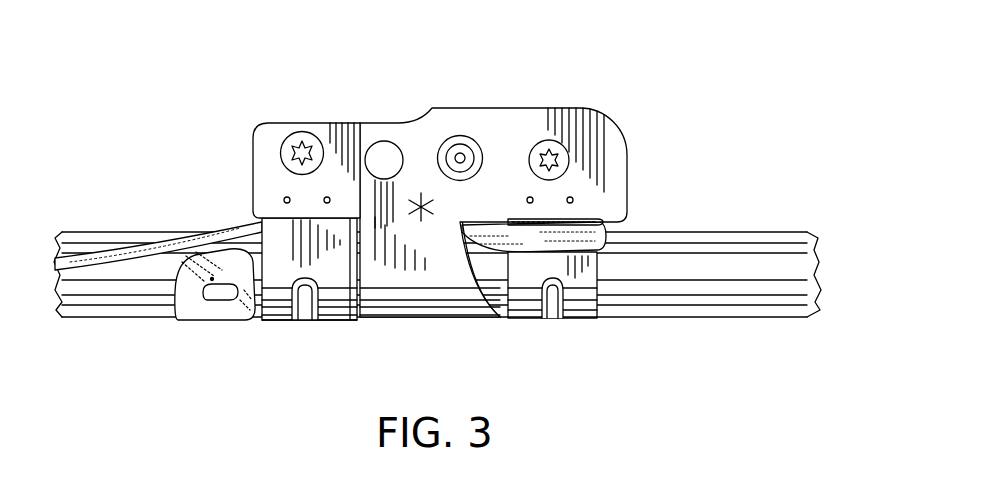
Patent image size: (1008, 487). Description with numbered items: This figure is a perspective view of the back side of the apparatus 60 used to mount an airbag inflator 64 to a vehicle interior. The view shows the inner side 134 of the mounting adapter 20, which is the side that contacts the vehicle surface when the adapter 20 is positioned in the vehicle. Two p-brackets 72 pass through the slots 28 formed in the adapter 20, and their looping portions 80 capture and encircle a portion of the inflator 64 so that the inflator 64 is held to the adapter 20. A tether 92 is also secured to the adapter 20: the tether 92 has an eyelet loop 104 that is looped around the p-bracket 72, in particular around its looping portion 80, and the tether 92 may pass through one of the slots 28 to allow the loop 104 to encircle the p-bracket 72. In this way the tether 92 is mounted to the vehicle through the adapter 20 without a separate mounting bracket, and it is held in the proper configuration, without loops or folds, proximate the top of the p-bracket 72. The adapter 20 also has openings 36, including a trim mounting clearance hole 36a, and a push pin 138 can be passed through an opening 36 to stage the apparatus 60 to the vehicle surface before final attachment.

The mounting adapter 20 is at (286, 124).
The slots 28 is at (360, 190).
The openings 36 is at (468, 150).
The trim mounting clearance hole 36a is at (397, 143).
The push pin 138 is at (462, 156).
The inner side 134 is at (392, 122).
The airbag inflator 64 is at (245, 240).
The tether 92 is at (198, 312).
The p-bracket 72 is at (300, 266).
The looping portion 80 is at (328, 262).
The eyelet loop 104 is at (565, 240).
The apparatus 60 is at (288, 335).